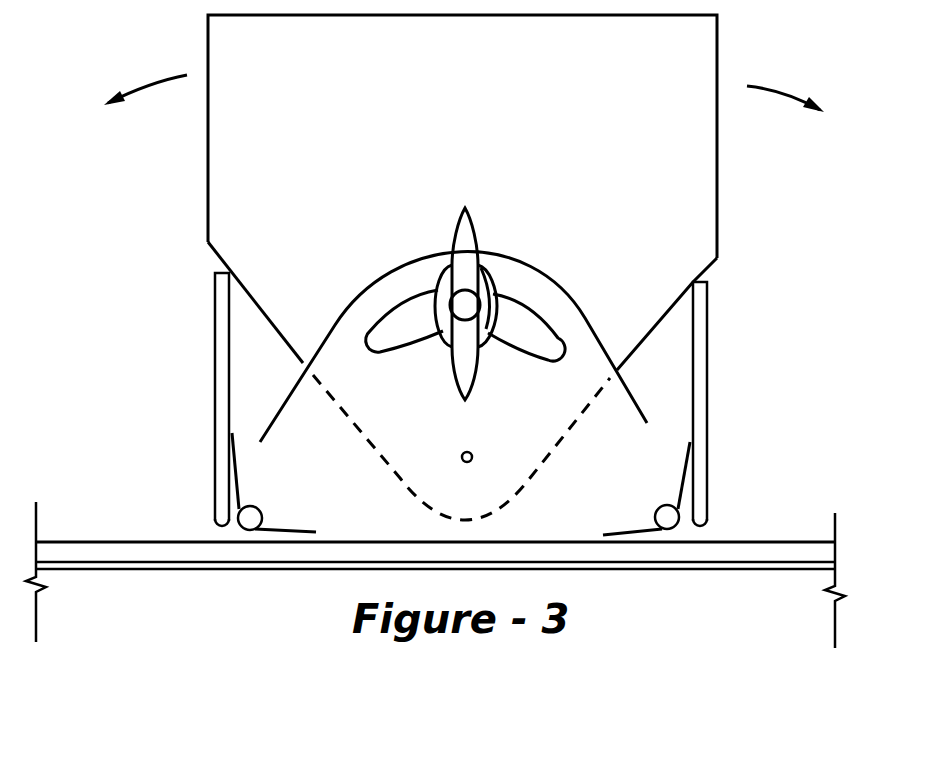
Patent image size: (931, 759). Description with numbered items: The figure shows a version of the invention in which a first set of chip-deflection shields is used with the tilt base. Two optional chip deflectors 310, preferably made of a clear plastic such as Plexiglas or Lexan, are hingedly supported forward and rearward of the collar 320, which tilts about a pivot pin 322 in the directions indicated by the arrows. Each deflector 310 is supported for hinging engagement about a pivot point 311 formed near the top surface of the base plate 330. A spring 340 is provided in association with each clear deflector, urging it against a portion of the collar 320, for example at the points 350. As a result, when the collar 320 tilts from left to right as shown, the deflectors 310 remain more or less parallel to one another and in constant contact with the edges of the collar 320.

The collar 320 is at (464, 136).
The points 350 is at (232, 270).
The chip deflectors 310 is at (223, 326).
The pivot points 311 is at (220, 520).
The springs 340 is at (660, 512).
The pivot pin 322 is at (463, 452).
The base plate 330 is at (785, 553).